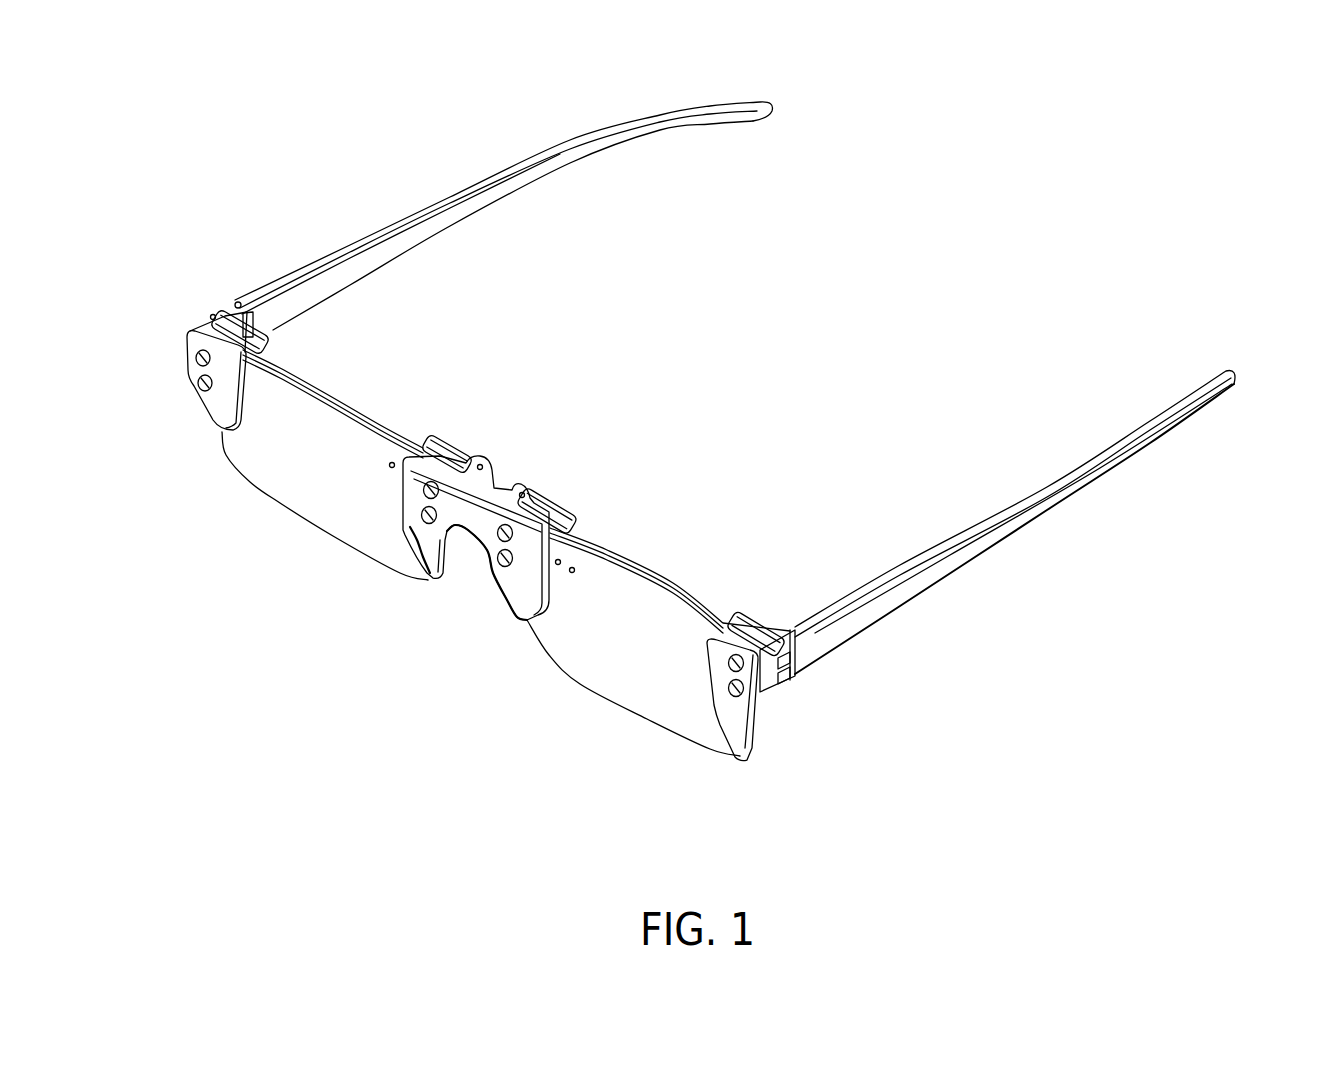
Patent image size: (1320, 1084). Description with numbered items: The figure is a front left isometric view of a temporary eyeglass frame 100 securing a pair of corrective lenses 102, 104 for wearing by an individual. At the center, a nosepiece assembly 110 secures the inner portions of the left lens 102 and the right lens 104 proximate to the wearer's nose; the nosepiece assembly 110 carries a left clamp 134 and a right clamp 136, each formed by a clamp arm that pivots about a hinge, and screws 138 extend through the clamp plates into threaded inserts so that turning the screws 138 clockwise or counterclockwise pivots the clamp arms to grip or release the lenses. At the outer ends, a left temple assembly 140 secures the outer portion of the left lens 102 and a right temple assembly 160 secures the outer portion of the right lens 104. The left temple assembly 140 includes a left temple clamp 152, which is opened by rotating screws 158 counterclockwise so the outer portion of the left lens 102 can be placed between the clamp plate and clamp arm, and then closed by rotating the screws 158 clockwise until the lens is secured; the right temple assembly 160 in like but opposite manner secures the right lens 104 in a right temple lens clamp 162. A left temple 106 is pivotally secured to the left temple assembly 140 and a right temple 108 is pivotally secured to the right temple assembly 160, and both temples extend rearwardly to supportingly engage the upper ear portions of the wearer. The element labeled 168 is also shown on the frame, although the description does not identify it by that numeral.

The temporary eyeglass frame 100 is at (1165, 116).
The left corrective lens 102 is at (630, 713).
The right corrective lens 104 is at (318, 530).
The left temple 106 is at (970, 557).
The right temple 108 is at (447, 223).
The nosepiece assembly 110 is at (508, 470).
The left clamp 134 is at (578, 494).
The right clamp 136 is at (452, 424).
The screws 138 is at (420, 522).
The left temple assembly 140 is at (800, 699).
The left temple clamp 152 is at (758, 600).
The screws 158 is at (728, 700).
The right temple assembly 160 is at (194, 310).
The right temple lens clamp 162 is at (274, 333).
The end piece screws 168 is at (198, 386).